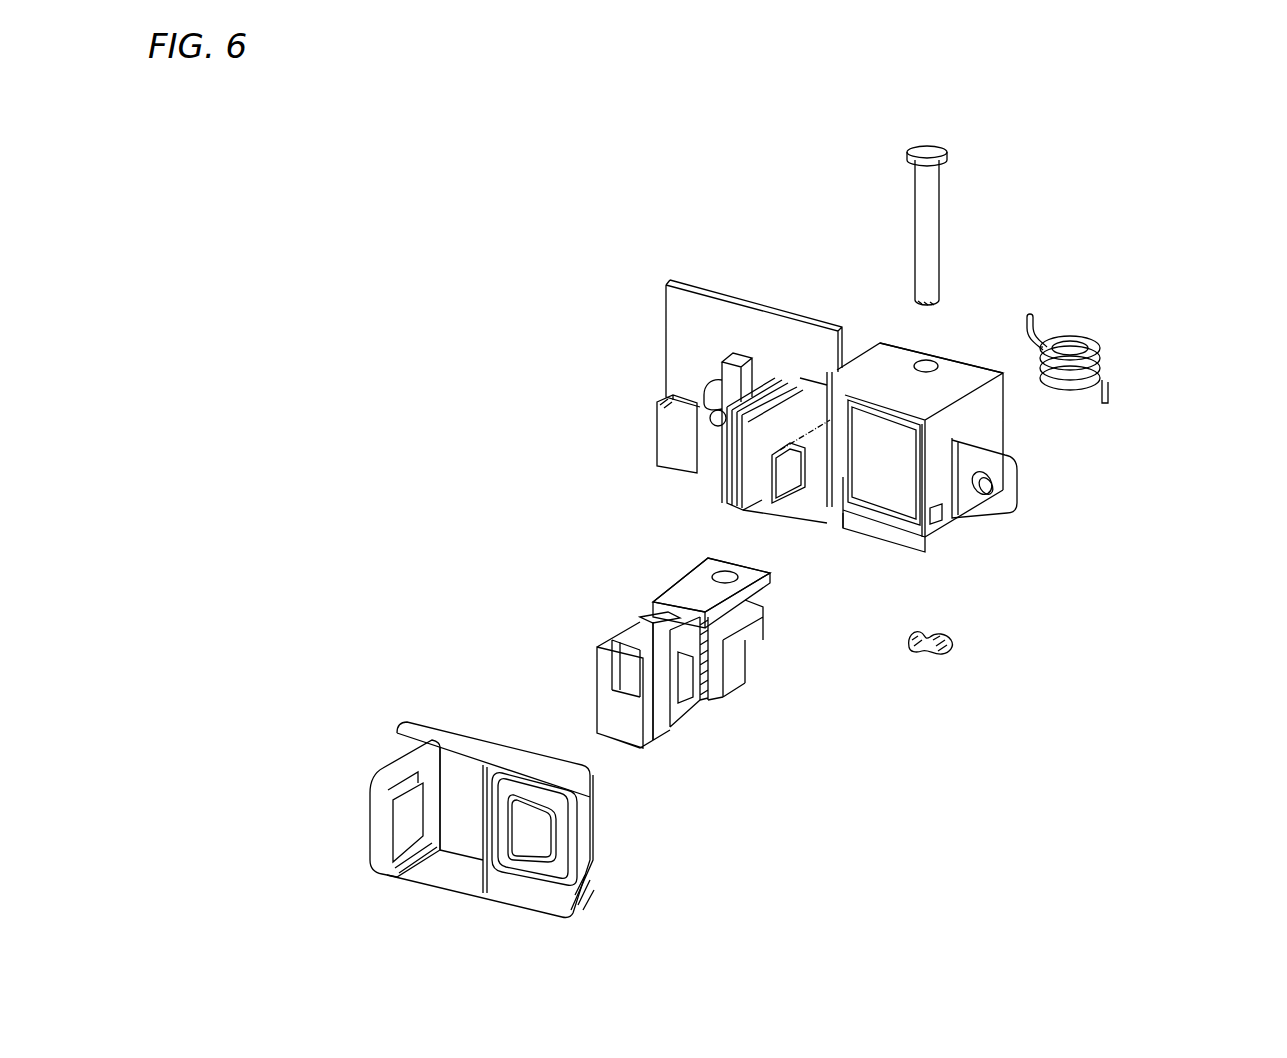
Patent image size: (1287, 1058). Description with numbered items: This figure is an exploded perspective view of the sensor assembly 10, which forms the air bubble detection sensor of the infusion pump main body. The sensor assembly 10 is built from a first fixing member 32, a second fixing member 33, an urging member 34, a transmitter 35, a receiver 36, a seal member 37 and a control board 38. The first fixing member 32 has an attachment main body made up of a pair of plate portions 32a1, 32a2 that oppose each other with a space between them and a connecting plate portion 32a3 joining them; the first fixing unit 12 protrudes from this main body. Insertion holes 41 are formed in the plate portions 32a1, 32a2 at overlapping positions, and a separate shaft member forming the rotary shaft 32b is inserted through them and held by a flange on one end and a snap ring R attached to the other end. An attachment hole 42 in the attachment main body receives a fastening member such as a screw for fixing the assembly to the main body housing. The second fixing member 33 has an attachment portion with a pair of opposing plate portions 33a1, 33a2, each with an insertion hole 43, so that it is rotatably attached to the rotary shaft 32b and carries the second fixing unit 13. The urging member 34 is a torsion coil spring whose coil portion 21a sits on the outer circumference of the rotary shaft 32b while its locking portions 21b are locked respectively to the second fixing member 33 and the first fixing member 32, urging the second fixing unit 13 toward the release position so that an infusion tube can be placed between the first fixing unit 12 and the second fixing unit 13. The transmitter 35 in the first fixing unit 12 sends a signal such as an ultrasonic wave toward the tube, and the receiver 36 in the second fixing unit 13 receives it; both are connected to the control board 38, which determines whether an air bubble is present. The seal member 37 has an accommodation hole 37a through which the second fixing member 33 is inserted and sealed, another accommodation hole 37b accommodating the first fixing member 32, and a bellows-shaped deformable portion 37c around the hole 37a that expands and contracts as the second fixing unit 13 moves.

The sensor assembly 10 is at (427, 337).
The first fixing unit 12 is at (754, 523).
The second fixing unit 13 is at (623, 735).
The first fixing member 32 is at (1028, 445).
The plate portion 32a1 is at (960, 367).
The plate portion 32a2 is at (897, 505).
The connecting plate portion 32a3 is at (840, 480).
The rotary shaft 32b is at (952, 217).
The second fixing member 33 is at (690, 740).
The plate portion 33a1 is at (695, 573).
The plate portion 33a2 is at (763, 640).
The urging member 34 is at (1123, 312).
The transmitter 35 is at (789, 488).
The receiver 36 is at (631, 640).
The seal member 37 is at (378, 702).
The accommodation hole 37a is at (537, 862).
The accommodation hole 37b is at (455, 773).
The deformable portion 37c is at (520, 793).
The control board 38 is at (695, 312).
The insertion hole 41 is at (925, 362).
The attachment hole 42 is at (712, 411).
The insertion hole 43 is at (735, 572).
The coil portion 21a is at (1100, 350).
The locking portion 21b is at (1033, 318).
The snap ring R is at (951, 648).